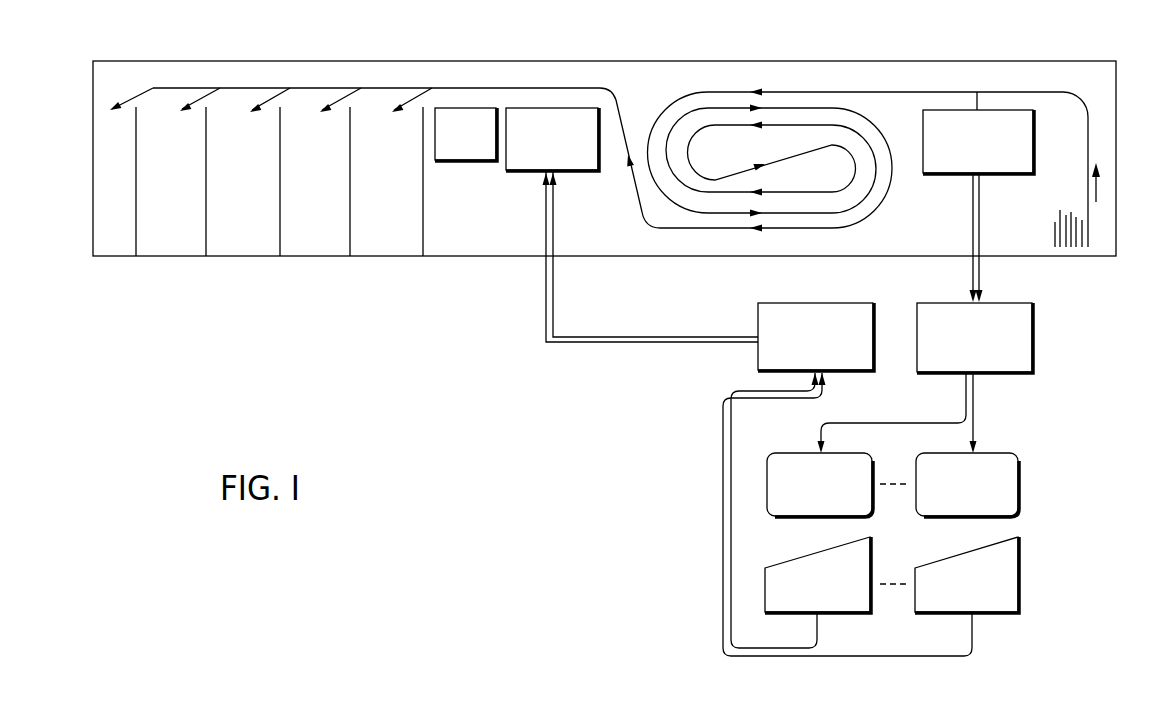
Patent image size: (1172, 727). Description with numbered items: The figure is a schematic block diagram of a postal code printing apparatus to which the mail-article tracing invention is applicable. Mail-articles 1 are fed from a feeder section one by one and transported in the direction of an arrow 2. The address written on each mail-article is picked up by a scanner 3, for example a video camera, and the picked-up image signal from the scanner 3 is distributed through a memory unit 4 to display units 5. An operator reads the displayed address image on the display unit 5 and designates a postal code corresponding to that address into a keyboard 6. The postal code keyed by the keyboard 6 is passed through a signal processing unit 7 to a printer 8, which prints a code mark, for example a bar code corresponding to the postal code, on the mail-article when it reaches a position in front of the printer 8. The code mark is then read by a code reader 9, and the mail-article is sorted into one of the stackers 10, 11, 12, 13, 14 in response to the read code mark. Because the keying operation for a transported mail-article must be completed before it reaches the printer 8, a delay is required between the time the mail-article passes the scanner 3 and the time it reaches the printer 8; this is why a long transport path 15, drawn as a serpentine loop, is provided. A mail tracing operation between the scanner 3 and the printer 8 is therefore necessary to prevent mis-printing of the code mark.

The mail-articles 1 is at (1090, 240).
The arrow 2 is at (1097, 190).
The scanner 3 is at (1034, 137).
The memory unit 4 is at (1034, 334).
The display units 5 is at (767, 481).
The keyboard 6 is at (770, 613).
The signal processing unit 7 is at (876, 303).
The printer 8 is at (587, 172).
The code reader 9 is at (466, 161).
The stacker 10 is at (396, 257).
The stacker 11 is at (316, 257).
The stacker 12 is at (242, 257).
The stacker 13 is at (172, 257).
The stacker 14 is at (120, 257).
The transport path 15 is at (688, 237).